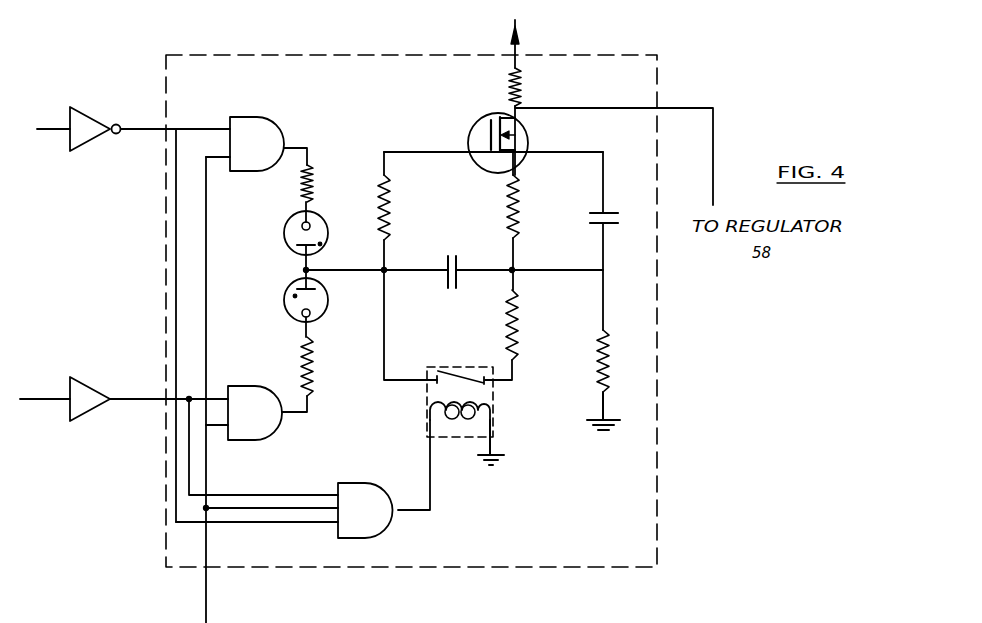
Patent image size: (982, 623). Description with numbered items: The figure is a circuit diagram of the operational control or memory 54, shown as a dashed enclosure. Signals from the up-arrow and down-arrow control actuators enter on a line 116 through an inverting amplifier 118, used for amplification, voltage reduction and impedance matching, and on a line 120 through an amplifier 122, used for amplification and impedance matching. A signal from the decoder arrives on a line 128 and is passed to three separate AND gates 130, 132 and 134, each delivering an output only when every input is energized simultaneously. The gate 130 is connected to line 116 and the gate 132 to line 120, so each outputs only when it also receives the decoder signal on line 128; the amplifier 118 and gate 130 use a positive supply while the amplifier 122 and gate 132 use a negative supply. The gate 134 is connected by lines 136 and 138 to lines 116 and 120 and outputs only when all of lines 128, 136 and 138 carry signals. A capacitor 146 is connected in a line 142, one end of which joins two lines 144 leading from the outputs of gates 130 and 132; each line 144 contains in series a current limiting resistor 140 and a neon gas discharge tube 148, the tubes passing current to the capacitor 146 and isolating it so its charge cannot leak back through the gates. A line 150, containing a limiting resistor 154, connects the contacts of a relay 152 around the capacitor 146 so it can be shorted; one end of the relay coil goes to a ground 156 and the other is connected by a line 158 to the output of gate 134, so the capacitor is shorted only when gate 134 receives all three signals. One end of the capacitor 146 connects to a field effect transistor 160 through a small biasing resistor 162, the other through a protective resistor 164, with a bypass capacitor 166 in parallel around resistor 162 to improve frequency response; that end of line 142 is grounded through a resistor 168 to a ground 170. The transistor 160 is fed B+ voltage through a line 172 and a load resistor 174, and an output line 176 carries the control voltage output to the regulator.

The operational control or memory 54 is at (628, 56).
The line 116 is at (55, 130).
The inverting amplifier 118 is at (106, 144).
The line 120 is at (38, 398).
The amplifier 122 is at (98, 410).
The line 128 is at (206, 608).
The AND gate 130 is at (250, 116).
The AND gate 132 is at (276, 432).
The AND gate 134 is at (393, 528).
The line 136 is at (176, 287).
The line 138 is at (262, 495).
The current limiting resistor 140 is at (305, 182).
The line 142 is at (405, 272).
The lines 144 is at (300, 212).
The capacitor 146 is at (460, 240).
The neon gas discharge tube 148 is at (288, 247).
The line 150 is at (512, 385).
The relay 152 is at (427, 410).
The limiting resistor 154 is at (518, 322).
The ground 156 is at (494, 450).
The line 158 is at (432, 490).
The field effect transistor 160 is at (480, 138).
The biasing resistor 162 is at (518, 204).
The protective resistor 164 is at (390, 196).
The bypass capacitor 166 is at (606, 229).
The resistor 168 is at (608, 349).
The ground 170 is at (605, 434).
The line 172 is at (510, 40).
The load resistor 174 is at (508, 88).
The output line 176 is at (572, 108).